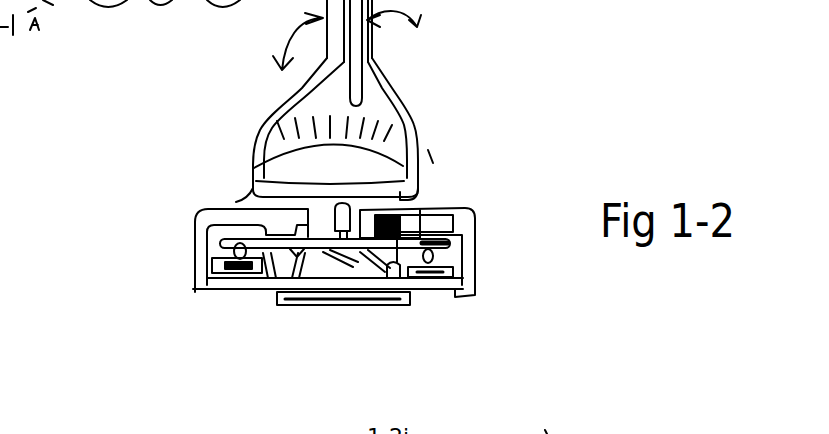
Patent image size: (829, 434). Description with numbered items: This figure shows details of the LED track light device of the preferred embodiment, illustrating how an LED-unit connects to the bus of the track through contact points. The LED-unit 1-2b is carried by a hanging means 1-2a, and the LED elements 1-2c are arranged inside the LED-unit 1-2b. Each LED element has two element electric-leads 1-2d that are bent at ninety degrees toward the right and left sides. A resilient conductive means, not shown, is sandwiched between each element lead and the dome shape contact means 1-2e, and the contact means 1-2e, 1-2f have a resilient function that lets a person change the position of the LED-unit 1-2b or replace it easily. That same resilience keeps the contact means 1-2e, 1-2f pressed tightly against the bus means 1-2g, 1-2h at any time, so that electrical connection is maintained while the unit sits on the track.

The hanging means 1-2a is at (327, 49).
The LED-unit 1-2b is at (390, 133).
The LED elements 1-2c is at (330, 208).
The element electric-leads 1-2d is at (425, 249).
The contact means 1-2e is at (340, 253).
The contact means 1-2f is at (340, 253).
The bus means 1-2g is at (447, 278).
The bus means 1-2h is at (220, 278).